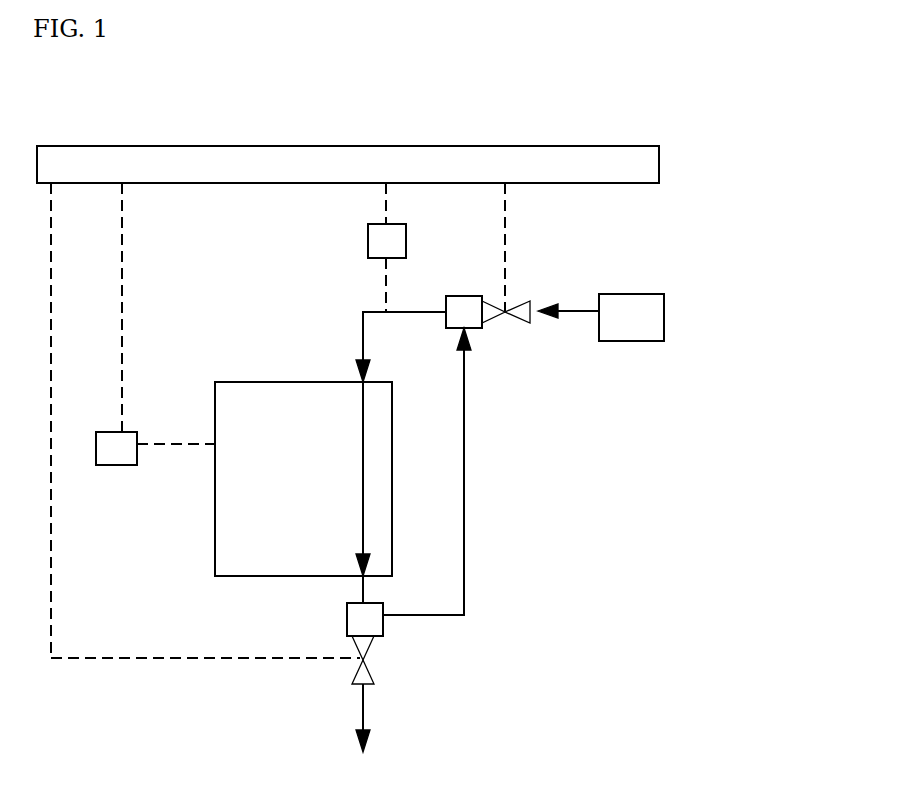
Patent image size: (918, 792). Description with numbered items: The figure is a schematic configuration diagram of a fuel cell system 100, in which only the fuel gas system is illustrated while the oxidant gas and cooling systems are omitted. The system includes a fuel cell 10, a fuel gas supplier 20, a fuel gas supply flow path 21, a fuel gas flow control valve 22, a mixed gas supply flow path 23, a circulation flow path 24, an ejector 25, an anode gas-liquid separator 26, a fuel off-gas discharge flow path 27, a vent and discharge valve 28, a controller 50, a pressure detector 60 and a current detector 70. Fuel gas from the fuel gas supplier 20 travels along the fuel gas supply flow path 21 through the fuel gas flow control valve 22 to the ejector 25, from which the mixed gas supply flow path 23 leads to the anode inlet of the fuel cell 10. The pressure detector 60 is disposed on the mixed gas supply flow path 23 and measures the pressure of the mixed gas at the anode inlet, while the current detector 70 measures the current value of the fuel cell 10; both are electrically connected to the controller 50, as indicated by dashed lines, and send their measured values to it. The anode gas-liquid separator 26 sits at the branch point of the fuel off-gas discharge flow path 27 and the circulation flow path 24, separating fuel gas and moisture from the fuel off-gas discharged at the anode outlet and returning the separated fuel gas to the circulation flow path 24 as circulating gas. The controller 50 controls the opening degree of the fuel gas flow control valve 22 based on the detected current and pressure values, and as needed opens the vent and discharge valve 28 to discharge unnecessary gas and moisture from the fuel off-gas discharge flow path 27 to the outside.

The fuel cell system 100 is at (692, 79).
The controller 50 is at (660, 160).
The pressure detector 60 is at (368, 241).
The current detector 70 is at (133, 465).
The fuel cell 10 is at (262, 382).
The fuel gas supplier 20 is at (646, 294).
The fuel gas supply flow path 21 is at (566, 313).
The fuel gas flow control valve 22 is at (507, 323).
The ejector 25 is at (460, 296).
The mixed gas supply flow path 23 is at (363, 345).
The circulation flow path 24 is at (464, 507).
The anode gas-liquid separator 26 is at (347, 622).
The vent and discharge valve 28 is at (363, 660).
The fuel off-gas discharge flow path 27 is at (363, 708).